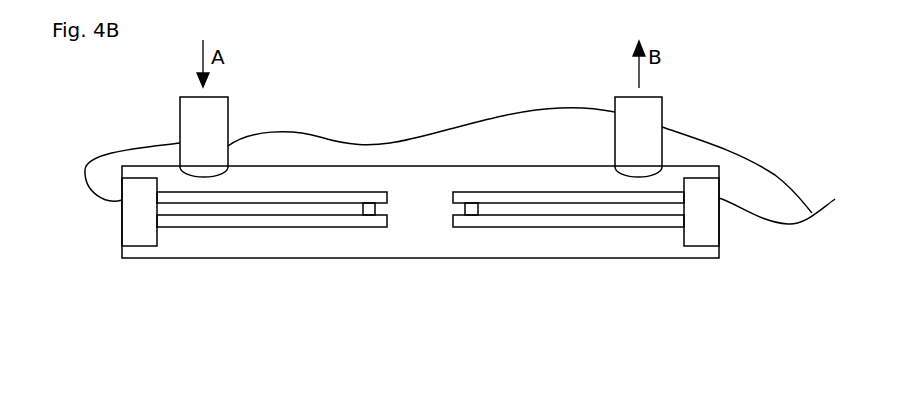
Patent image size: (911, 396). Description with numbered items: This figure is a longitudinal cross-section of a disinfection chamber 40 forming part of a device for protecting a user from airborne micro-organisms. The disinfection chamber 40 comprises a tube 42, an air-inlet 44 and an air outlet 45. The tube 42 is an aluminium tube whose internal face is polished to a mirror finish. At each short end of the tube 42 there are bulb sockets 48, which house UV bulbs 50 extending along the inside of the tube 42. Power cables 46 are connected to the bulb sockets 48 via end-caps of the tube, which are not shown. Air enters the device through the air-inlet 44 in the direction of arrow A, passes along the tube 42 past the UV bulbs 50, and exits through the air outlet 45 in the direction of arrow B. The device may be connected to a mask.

The disinfection chamber 40 is at (348, 287).
The tube 42 is at (409, 166).
The air-inlet 44 is at (193, 133).
The air outlet 45 is at (637, 112).
The power cables 46 is at (810, 213).
The bulb sockets 48 is at (143, 225).
The UV bulbs 50 is at (215, 226).